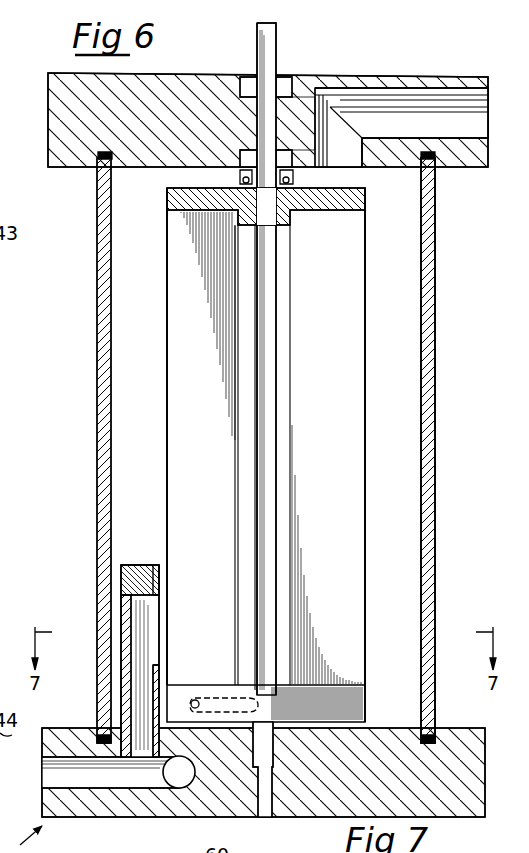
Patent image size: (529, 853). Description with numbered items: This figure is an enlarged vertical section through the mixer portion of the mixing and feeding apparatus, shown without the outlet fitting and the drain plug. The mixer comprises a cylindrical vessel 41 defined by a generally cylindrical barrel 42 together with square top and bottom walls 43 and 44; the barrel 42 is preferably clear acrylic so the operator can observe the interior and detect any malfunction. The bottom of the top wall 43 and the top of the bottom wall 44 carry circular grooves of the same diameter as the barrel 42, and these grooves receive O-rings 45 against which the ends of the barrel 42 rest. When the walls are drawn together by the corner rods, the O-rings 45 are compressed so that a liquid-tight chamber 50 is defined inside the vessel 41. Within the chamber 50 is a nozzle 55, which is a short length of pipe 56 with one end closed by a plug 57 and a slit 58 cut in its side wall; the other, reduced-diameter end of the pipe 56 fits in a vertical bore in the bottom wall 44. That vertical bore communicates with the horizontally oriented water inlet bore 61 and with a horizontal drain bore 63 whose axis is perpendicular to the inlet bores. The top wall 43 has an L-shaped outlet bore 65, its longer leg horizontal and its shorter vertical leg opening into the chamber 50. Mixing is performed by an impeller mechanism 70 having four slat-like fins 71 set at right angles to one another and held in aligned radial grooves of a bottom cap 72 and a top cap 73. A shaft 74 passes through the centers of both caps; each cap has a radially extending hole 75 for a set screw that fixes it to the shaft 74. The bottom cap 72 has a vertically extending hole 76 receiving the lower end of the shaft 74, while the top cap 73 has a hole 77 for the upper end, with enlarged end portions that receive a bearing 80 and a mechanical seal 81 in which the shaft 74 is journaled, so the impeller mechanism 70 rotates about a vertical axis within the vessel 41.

The cylindrical vessel 41 is at (438, 418).
The cylindrical barrel 42 is at (436, 313).
The top wall 43 is at (50, 106).
The bottom wall 44 is at (125, 812).
The O-rings 45 is at (100, 162).
The liquid-tight chamber 50 is at (412, 530).
The nozzle 55 is at (150, 553).
The pipe 56 is at (120, 652).
The plug 57 is at (128, 581).
The slit 58 is at (160, 606).
The water inlet bore 61 is at (180, 788).
The drain bore 63 is at (62, 784).
The outlet bore 65 is at (488, 137).
The impeller mechanism 70 is at (368, 494).
The fins 71 is at (168, 355).
The bottom cap 72 is at (367, 705).
The top cap 73 is at (367, 197).
The shaft 74 is at (278, 310).
The radially extending hole 75 is at (195, 700).
The vertically extending hole 76 is at (258, 818).
The hole 77 is at (296, 104).
The bearing 80 is at (248, 77).
The mechanical seal 81 is at (290, 182).